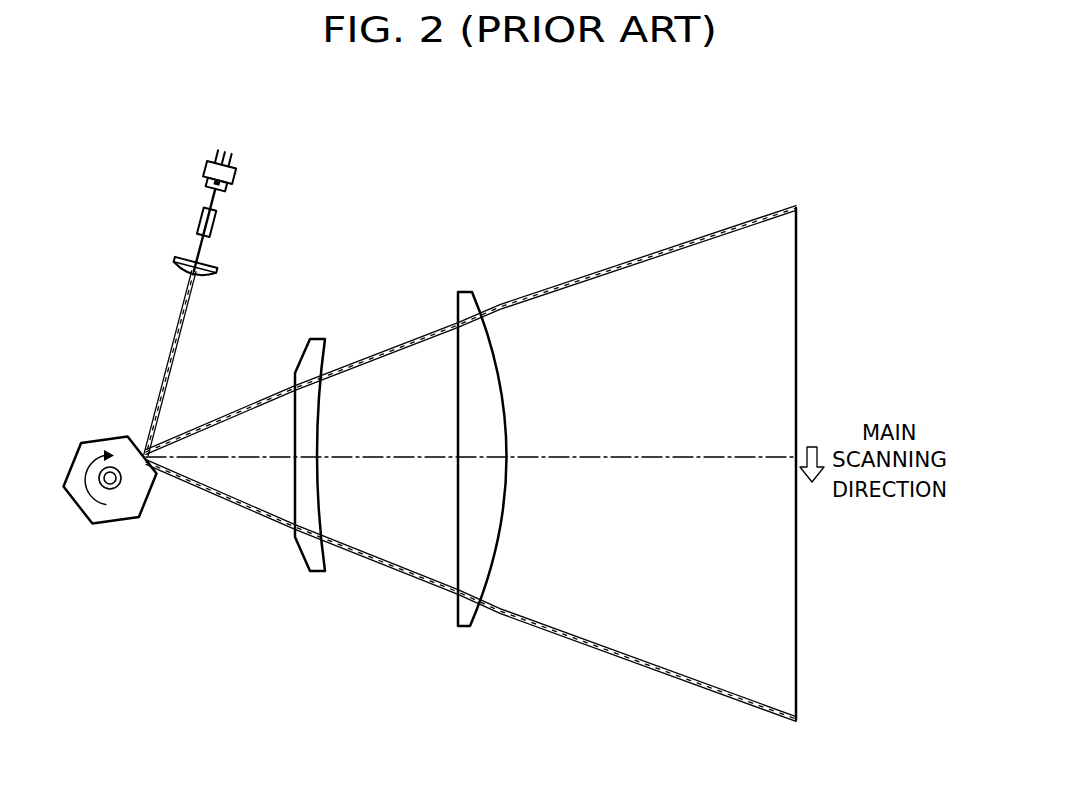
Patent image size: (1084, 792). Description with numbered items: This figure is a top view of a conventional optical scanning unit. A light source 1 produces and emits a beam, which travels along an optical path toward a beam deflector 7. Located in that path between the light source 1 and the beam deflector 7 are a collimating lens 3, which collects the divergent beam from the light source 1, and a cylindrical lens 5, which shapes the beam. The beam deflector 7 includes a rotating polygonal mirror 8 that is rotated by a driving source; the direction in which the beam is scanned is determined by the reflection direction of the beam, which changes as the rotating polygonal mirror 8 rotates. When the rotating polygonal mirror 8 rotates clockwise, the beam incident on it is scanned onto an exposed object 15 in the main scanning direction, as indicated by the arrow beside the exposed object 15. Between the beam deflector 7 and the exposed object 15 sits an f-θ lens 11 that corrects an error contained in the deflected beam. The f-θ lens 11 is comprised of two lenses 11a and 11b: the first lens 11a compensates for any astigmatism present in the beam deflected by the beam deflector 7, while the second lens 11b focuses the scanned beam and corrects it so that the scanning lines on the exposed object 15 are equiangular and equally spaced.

The light source 1 is at (237, 170).
The collimating lens 3 is at (217, 226).
The cylindrical lens 5 is at (220, 274).
The beam deflector 7 is at (105, 428).
The rotating polygonal mirror 8 is at (122, 508).
The f-θ lens 11 is at (401, 485).
The lens 11a is at (318, 573).
The lens 11b is at (458, 619).
The exposed object 15 is at (797, 650).